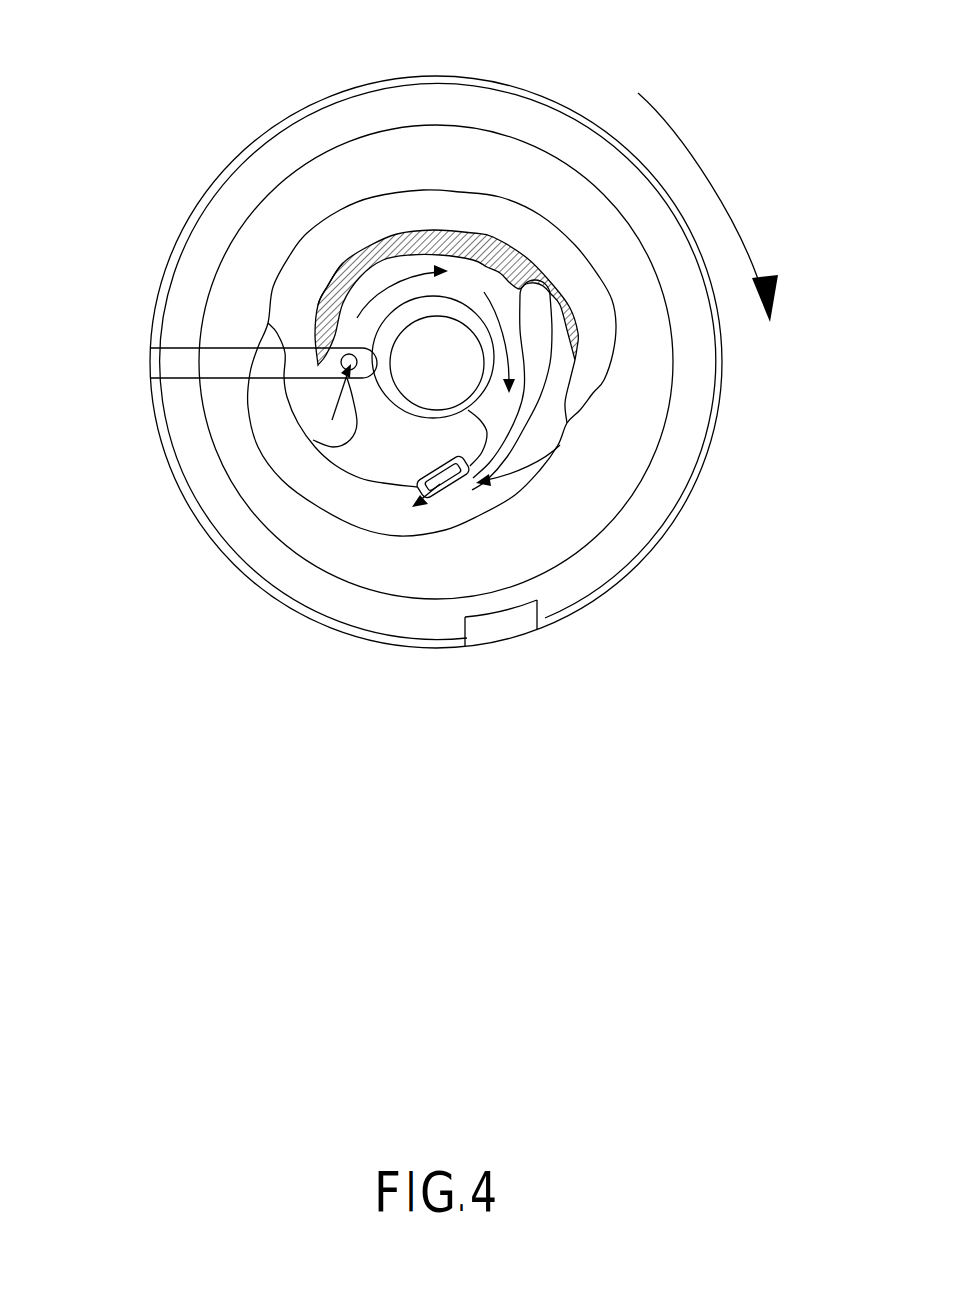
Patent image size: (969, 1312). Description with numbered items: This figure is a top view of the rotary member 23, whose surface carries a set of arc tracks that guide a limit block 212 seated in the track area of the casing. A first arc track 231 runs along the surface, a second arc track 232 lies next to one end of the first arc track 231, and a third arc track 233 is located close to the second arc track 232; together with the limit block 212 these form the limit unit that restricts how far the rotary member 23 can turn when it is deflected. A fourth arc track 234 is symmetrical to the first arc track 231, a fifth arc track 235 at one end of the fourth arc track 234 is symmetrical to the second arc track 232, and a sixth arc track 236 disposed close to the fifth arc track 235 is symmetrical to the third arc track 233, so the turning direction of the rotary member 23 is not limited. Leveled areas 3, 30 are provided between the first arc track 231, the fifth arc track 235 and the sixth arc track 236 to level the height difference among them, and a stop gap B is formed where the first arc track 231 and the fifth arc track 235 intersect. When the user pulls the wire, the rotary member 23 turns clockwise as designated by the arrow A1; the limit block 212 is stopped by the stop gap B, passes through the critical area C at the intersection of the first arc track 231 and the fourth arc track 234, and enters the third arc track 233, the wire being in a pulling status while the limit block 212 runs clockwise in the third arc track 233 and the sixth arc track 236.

The rotary member 23 is at (185, 122).
The leveled area 3 is at (350, 253).
The stop gap B is at (422, 232).
The fifth arc track 235 is at (468, 282).
The sixth arc track 236 is at (538, 235).
The fourth arc track 234 is at (497, 423).
The leveled area 30 is at (578, 331).
The limit block 212 is at (318, 340).
The first arc track 231 is at (347, 318).
The third arc track 233 is at (308, 458).
The second arc track 232 is at (418, 440).
The critical area C is at (450, 447).
The arrow A1 is at (708, 207).